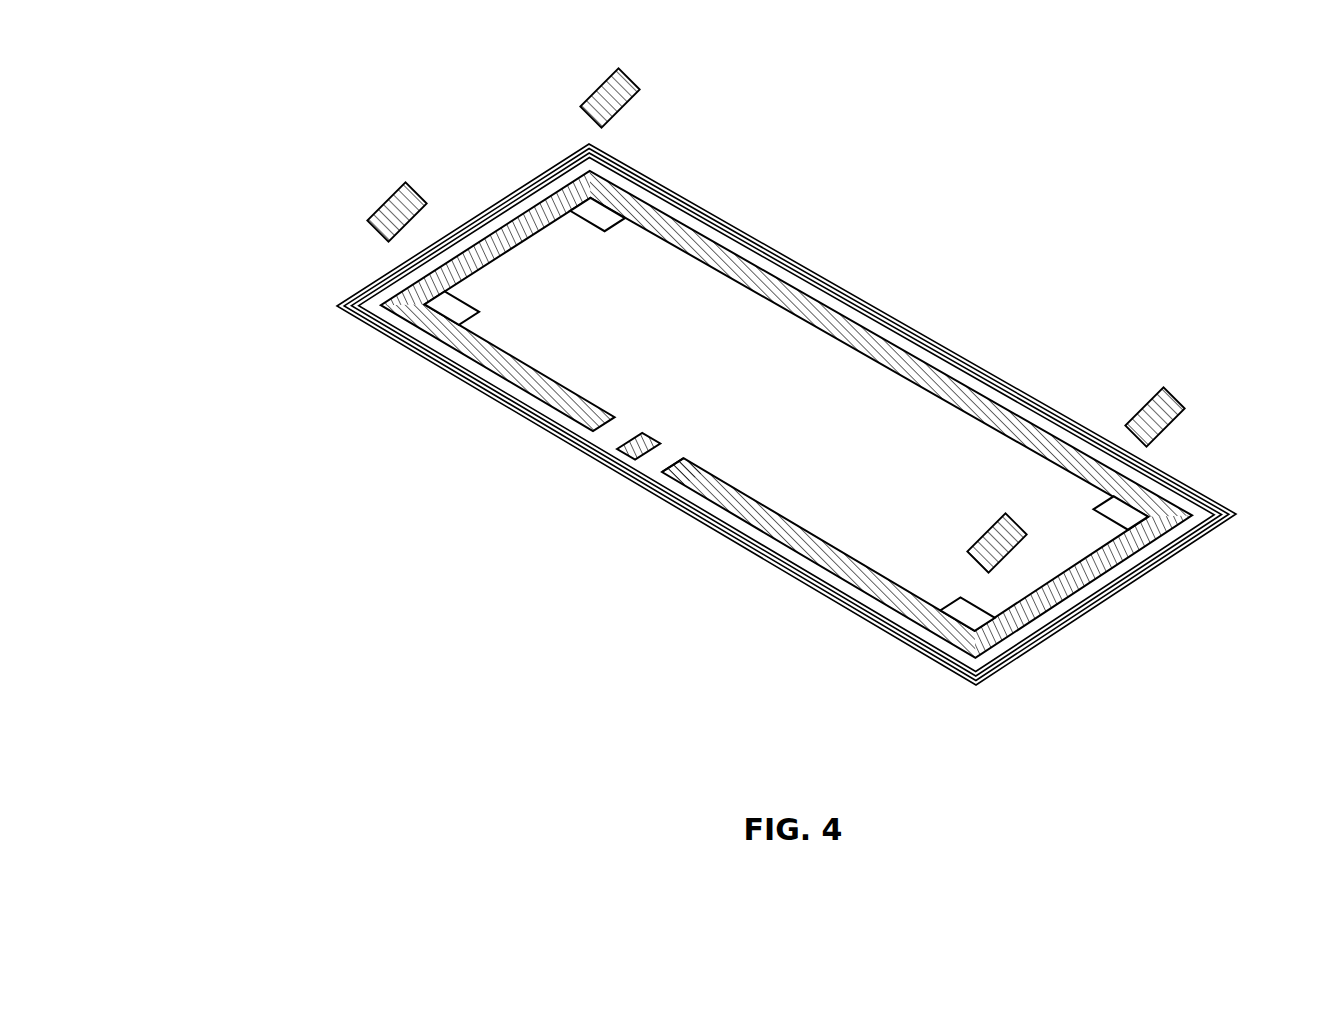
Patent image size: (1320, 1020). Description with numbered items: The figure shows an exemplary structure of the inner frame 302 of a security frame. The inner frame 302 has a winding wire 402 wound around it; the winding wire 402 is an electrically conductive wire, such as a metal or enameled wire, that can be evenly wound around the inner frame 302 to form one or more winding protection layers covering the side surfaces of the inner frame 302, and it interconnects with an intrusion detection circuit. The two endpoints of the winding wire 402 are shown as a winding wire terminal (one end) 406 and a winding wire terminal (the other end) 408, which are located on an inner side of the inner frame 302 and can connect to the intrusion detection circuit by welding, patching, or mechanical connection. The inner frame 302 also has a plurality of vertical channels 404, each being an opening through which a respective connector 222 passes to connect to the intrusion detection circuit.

The inner frame 302 is at (792, 150).
The connector 222 is at (370, 222).
The winding wire 402 is at (808, 588).
The channel 404 is at (472, 315).
The winding wire terminal (one end) 406 is at (640, 437).
The winding wire terminal (the other end) 408 is at (672, 458).